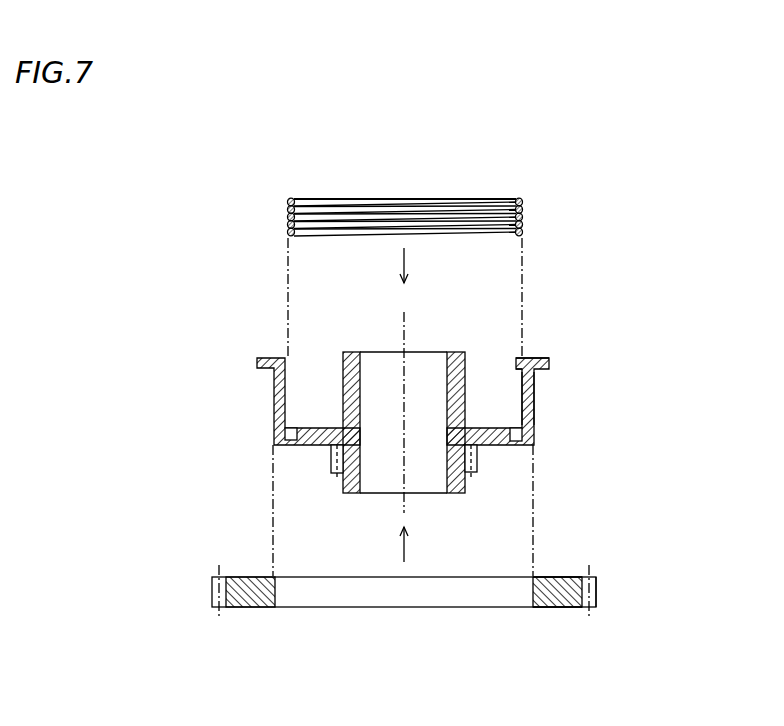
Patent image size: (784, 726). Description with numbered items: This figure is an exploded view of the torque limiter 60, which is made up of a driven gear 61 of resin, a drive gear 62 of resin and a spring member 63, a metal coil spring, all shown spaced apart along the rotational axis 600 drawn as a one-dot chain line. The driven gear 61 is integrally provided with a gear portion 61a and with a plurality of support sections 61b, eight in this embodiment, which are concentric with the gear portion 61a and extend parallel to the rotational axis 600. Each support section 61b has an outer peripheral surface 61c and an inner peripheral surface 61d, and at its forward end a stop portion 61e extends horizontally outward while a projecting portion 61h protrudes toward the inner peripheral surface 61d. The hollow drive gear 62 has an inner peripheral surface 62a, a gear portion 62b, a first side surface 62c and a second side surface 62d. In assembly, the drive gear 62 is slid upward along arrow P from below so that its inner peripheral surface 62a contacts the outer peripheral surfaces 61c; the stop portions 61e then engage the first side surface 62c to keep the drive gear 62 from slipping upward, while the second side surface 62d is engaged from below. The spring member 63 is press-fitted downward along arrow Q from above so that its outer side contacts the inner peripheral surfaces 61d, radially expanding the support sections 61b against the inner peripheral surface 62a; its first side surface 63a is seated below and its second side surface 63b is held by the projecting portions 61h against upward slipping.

The torque limiter 60 is at (145, 345).
The driven gear 61 is at (348, 352).
The gear portion 61a is at (479, 458).
The support sections 61b is at (536, 425).
The outer peripheral surfaces 61c is at (535, 398).
The inner peripheral surfaces 61d is at (520, 407).
The stop portions 61e is at (547, 373).
The projecting portions 61h is at (513, 378).
The drive gear 62 is at (240, 577).
The inner peripheral surface 62a is at (533, 592).
The gear portion 62b is at (596, 592).
The first side surface 62c is at (558, 577).
The second side surface 62d is at (558, 607).
The spring member 63 is at (402, 208).
The first side surface 63a is at (288, 237).
The second side surface 63b is at (288, 203).
The rotational axis 600 is at (398, 336).